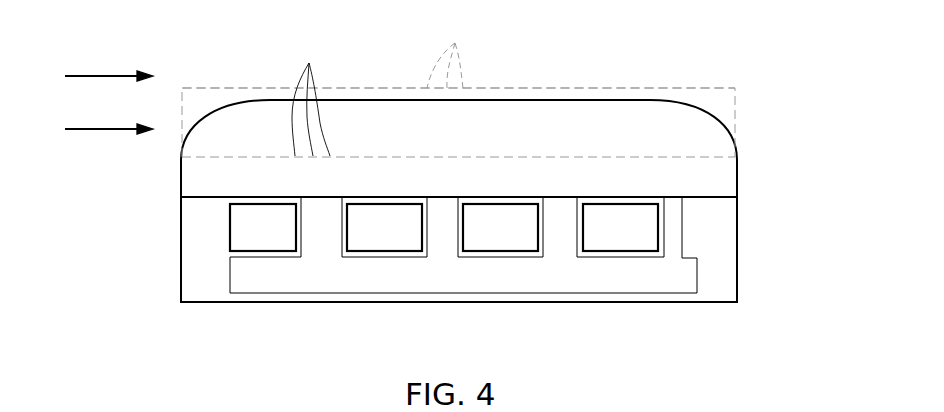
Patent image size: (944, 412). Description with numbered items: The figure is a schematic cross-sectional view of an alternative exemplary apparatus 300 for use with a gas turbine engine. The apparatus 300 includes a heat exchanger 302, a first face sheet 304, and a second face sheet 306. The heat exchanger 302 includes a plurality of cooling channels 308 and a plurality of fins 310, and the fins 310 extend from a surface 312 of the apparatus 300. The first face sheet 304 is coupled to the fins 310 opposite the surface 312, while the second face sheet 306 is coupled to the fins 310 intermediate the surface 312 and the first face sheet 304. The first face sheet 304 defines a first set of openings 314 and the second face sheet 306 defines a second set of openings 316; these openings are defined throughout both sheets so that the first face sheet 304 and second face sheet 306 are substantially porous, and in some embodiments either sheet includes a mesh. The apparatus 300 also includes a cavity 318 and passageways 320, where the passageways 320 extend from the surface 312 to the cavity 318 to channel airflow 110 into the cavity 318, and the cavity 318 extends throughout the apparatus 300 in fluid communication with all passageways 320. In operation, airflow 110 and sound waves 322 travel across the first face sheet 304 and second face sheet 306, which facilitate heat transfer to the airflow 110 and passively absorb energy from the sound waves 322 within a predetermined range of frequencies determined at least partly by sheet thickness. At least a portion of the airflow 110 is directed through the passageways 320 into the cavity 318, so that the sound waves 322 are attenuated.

The airflow 110 is at (105, 73).
The apparatus 300 is at (628, 62).
The heat exchanger 302 is at (743, 127).
The first face sheet 304 is at (556, 86).
The second face sheet 306 is at (687, 157).
The cooling channels 308 is at (262, 252).
The fins 310 is at (373, 111).
The surface 312 is at (226, 199).
The first set of openings 314 is at (450, 55).
The second set of openings 316 is at (310, 98).
The cavity 318 is at (585, 275).
The passageways 320 is at (301, 227).
The sound waves 322 is at (100, 131).